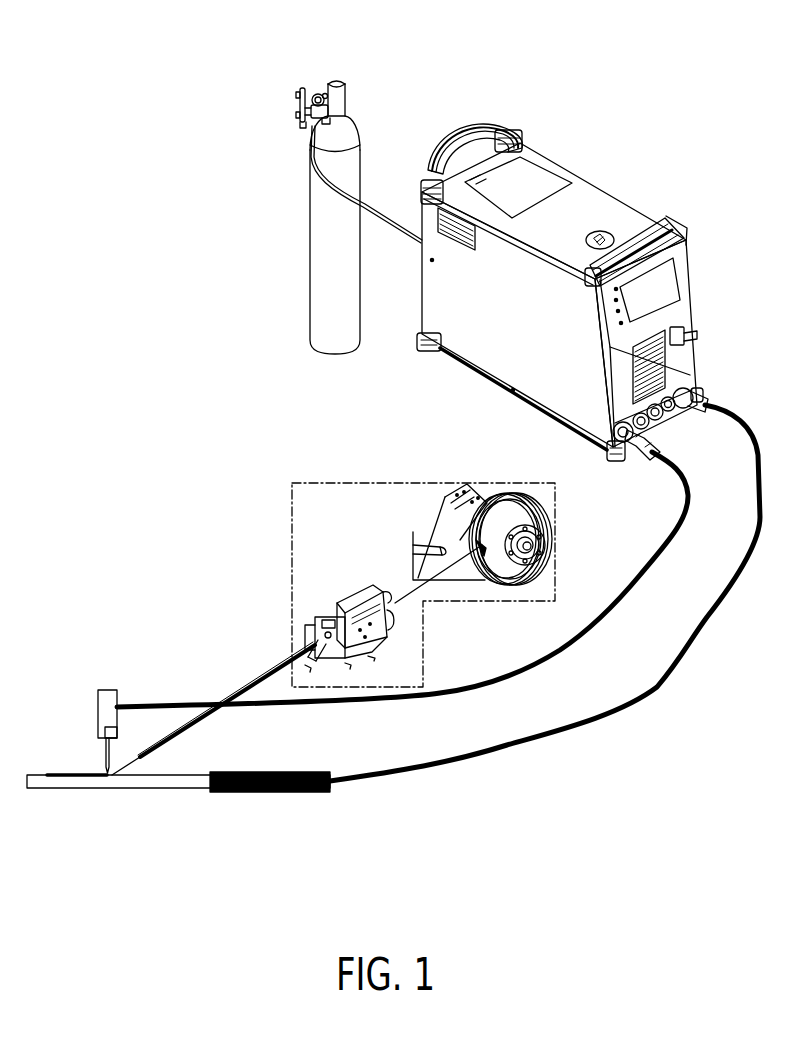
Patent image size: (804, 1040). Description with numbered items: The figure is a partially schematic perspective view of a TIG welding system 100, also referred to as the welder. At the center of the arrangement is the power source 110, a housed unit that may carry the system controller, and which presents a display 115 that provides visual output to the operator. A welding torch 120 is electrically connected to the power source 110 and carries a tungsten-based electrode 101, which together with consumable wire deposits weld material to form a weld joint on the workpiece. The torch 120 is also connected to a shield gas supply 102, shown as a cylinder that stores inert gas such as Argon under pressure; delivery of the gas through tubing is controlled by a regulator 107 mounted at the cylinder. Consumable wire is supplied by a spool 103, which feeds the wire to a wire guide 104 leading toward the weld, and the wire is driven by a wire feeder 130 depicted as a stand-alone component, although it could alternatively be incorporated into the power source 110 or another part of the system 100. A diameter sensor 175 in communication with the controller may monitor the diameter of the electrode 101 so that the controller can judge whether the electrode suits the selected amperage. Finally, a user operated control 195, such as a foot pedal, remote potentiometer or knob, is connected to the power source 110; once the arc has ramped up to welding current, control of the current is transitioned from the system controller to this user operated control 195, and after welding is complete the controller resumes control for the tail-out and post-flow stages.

The welding system 100 is at (157, 65).
The tungsten-based electrode 101 is at (101, 750).
The shield gas supply 102 is at (353, 162).
The spool 103 is at (527, 513).
The wire guide 104 is at (178, 740).
The regulator 107 is at (320, 93).
The power source 110 is at (663, 100).
The display 115 is at (667, 283).
The welding torch 120 is at (110, 698).
The wire feeder 130 is at (386, 634).
The diameter sensor 175 is at (107, 732).
The user operated control 195 is at (545, 593).